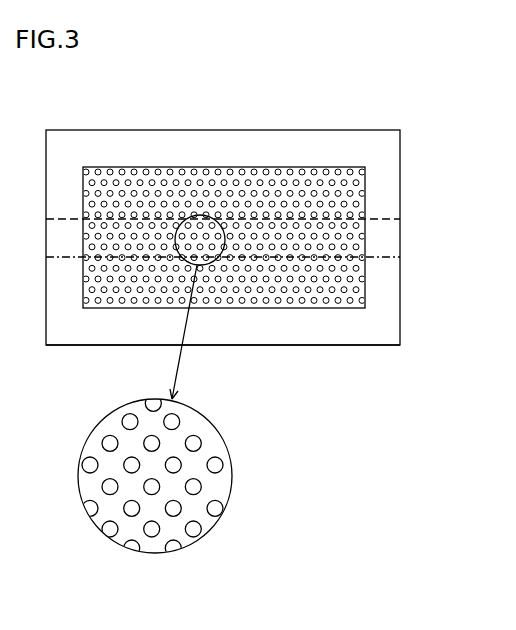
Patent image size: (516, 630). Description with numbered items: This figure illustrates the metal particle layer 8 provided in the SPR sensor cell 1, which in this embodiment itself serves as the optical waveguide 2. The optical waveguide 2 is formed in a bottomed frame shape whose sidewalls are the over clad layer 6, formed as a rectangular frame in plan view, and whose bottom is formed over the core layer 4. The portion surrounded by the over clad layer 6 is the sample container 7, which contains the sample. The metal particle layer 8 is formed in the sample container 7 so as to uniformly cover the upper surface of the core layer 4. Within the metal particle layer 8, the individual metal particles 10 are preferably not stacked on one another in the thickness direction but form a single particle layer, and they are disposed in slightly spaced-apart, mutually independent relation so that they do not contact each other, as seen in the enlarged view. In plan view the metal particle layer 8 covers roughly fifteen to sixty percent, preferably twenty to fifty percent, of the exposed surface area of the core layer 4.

The SPR sensor cell 1 is at (287, 447).
The optical waveguide 2 is at (363, 347).
The core layer 4 is at (395, 239).
The over clad layer 6 is at (393, 151).
The sample container 7 is at (313, 167).
The metal particle layer 8 is at (222, 172).
The metal particles 10 is at (133, 467).